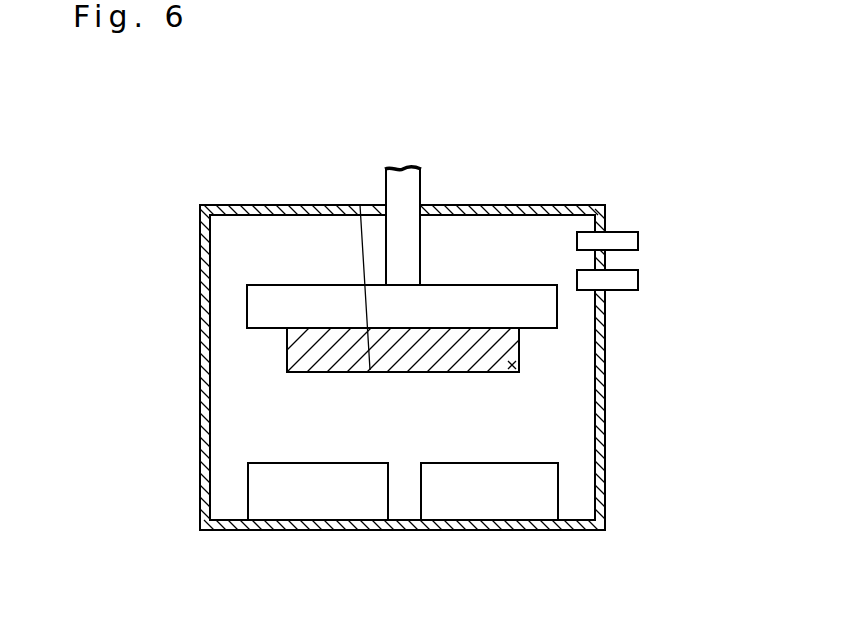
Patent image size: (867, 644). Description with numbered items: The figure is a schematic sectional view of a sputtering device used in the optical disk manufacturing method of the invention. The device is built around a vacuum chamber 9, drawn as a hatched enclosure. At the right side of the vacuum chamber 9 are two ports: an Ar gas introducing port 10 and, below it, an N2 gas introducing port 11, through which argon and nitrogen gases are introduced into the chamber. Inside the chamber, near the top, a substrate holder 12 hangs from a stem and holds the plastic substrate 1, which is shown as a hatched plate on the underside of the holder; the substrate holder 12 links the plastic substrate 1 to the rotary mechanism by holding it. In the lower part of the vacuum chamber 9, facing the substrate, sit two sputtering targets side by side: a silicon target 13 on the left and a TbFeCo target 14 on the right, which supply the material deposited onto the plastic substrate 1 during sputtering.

The plastic substrate 1 is at (512, 365).
The vacuum chamber 9 is at (566, 207).
The Ar gas introducing port 10 is at (632, 228).
The N2 gas introducing port 11 is at (637, 272).
The substrate holder 12 is at (550, 310).
The silicon target 13 is at (352, 503).
The TbFeCo target 14 is at (535, 503).